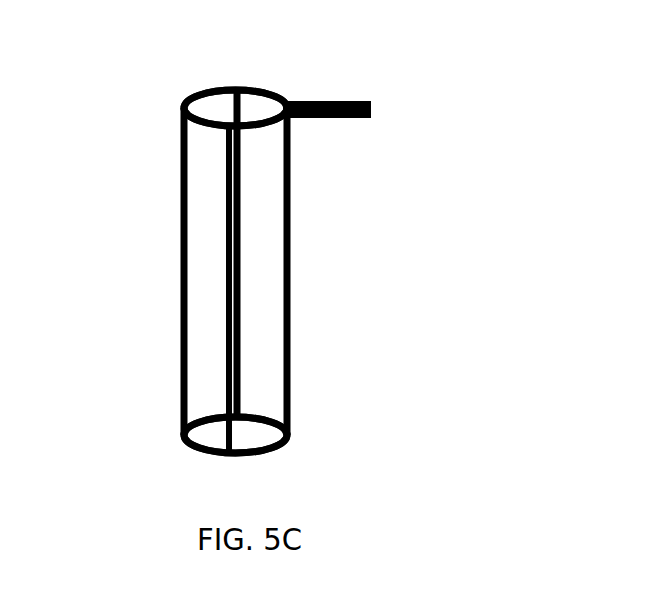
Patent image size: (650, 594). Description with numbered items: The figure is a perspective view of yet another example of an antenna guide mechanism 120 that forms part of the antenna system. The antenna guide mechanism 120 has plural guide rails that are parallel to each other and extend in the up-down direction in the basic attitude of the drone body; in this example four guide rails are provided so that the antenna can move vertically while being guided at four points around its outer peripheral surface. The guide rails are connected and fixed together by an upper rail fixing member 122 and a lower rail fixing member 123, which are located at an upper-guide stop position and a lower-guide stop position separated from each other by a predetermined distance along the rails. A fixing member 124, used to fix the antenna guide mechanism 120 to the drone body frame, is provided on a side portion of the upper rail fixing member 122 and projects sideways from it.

The antenna guide mechanism 120 is at (234, 267).
The rail fixing member 122 is at (203, 94).
The rail fixing member 123 is at (283, 447).
The fixing member 124 is at (312, 100).